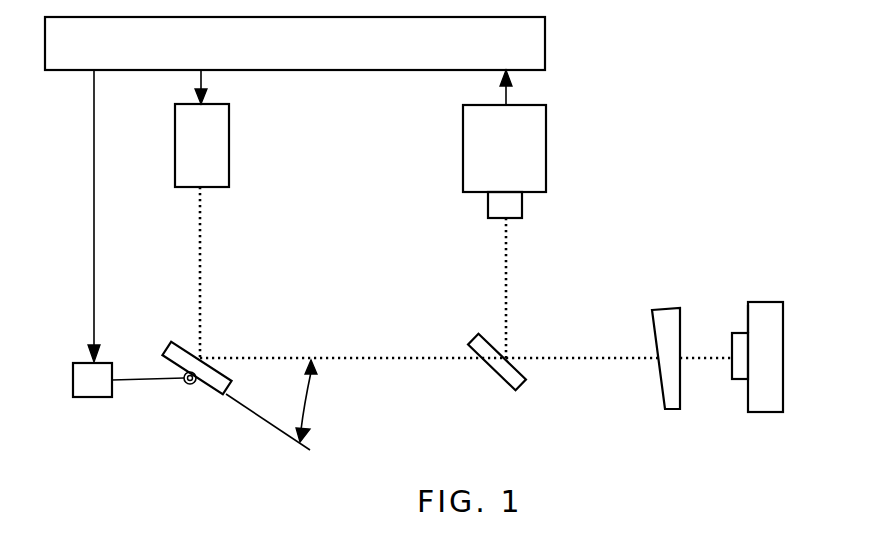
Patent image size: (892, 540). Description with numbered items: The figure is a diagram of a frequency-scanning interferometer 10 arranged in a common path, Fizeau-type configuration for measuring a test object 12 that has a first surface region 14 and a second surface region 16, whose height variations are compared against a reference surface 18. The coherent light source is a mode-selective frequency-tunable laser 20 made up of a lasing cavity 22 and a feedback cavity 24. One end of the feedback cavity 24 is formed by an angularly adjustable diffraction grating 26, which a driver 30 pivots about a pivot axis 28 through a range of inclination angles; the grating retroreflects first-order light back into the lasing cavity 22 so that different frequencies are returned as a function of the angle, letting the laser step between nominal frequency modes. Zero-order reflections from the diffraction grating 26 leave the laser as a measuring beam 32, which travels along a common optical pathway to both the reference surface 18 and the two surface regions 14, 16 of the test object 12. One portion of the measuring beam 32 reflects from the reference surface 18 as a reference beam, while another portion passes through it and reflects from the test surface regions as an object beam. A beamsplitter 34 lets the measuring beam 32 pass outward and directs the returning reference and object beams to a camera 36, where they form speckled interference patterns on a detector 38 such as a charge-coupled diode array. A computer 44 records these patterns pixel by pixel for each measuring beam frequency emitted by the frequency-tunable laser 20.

The frequency-scanning interferometer 10 is at (612, 142).
The test object 12 is at (765, 400).
The first surface region 14 is at (732, 373).
The second surface region 16 is at (752, 312).
The reference surface 18 is at (688, 322).
The frequency-tunable laser 20 is at (262, 259).
The lasing cavity 22 is at (193, 143).
The feedback cavity 24 is at (198, 291).
The angularly adjustable diffraction grating 26 is at (184, 343).
The pivot axis 28 is at (190, 386).
The driver 30 is at (93, 380).
The measuring beam 32 is at (390, 352).
The beamsplitter 34 is at (522, 370).
The camera 36 is at (483, 170).
The detector 38 is at (487, 107).
The computer 44 is at (335, 55).